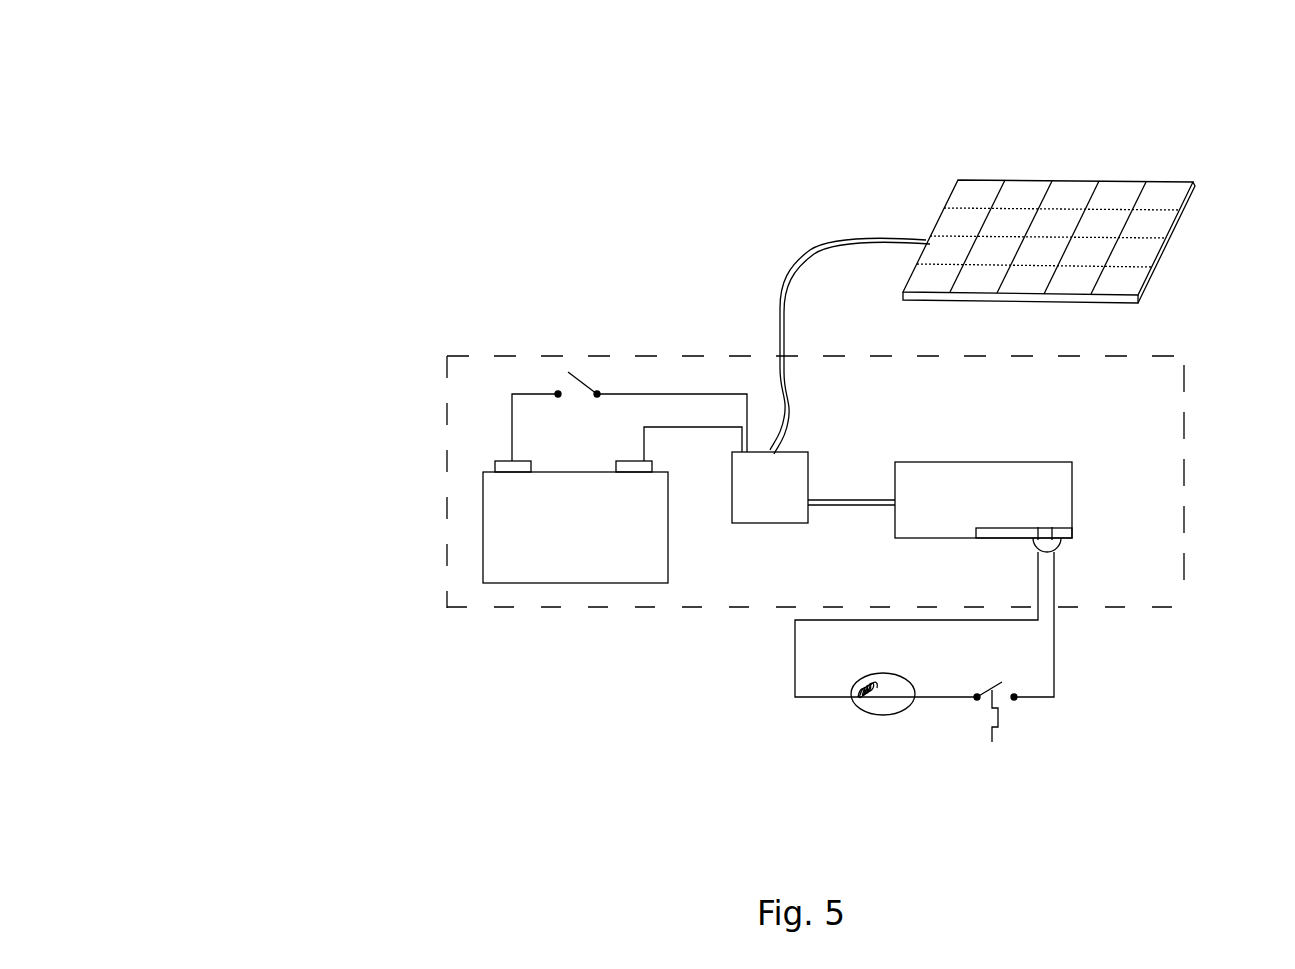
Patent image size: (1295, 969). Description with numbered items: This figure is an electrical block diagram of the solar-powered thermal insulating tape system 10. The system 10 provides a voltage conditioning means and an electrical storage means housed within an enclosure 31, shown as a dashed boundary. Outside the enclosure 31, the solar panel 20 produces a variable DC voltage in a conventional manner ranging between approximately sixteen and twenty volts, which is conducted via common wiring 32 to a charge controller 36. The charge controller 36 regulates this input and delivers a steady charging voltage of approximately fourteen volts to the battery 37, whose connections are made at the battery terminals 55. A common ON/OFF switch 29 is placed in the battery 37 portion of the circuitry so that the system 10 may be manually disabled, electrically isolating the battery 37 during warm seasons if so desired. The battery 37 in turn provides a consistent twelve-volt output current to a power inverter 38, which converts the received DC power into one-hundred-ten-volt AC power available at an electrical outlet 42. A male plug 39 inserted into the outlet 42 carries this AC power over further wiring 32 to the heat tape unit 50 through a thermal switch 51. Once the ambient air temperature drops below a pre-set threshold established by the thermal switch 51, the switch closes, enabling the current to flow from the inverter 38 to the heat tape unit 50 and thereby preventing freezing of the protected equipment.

The solar-powered thermal insulating tape 10 is at (266, 131).
The solar panel 20 is at (950, 192).
The ON/OFF switch 29 is at (580, 380).
The enclosure 31 is at (1183, 370).
The wiring 32 is at (853, 498).
The charge controller 36 is at (758, 510).
The battery 37 is at (518, 565).
The inverter 38 is at (1068, 478).
The male plug 39 is at (1062, 548).
The electrical outlet 42 is at (987, 532).
The heat tape unit 50 is at (862, 710).
The thermal switch 51 is at (1002, 715).
The battery terminal 55 is at (633, 467).